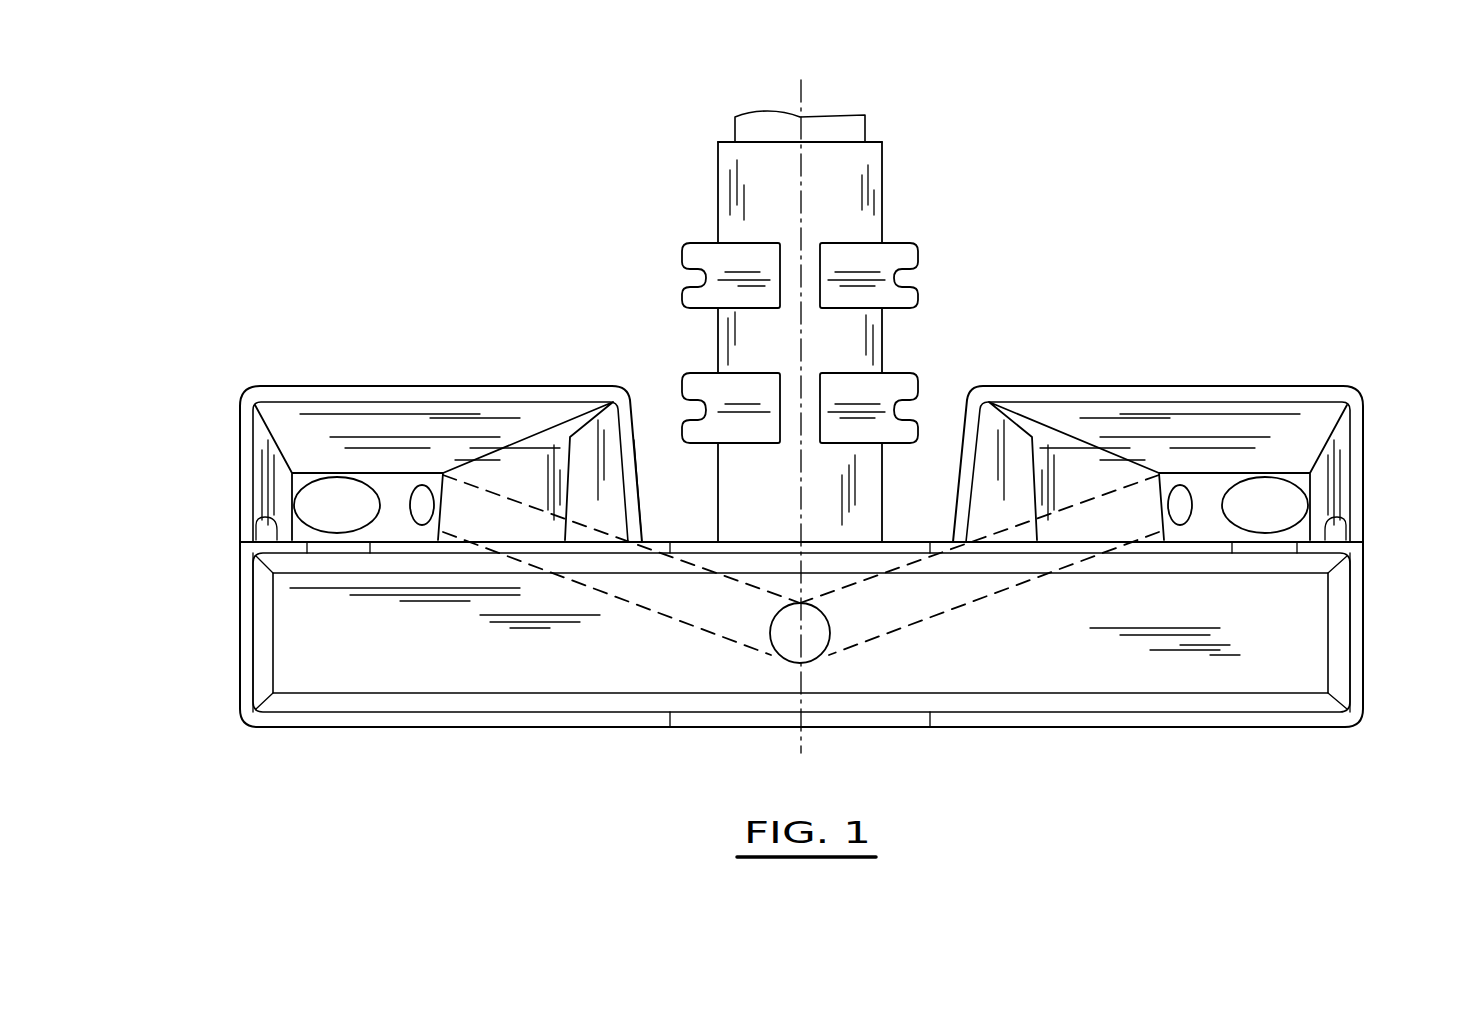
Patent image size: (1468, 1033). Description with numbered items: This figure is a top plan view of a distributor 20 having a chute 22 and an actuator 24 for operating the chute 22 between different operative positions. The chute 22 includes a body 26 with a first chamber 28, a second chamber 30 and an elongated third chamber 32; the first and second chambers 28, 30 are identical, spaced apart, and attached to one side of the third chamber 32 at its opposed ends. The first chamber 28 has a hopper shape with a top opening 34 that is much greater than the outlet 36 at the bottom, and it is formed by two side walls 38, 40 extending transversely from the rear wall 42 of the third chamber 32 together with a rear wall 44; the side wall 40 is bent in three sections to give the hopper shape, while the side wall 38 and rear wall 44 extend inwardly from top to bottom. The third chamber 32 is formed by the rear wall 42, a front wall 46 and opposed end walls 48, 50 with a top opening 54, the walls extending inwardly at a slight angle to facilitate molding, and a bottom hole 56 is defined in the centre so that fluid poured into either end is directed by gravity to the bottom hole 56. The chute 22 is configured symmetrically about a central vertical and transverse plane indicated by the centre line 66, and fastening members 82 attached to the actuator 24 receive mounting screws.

The distributor 20 is at (1157, 279).
The chute 22 is at (1238, 389).
The actuator 24 is at (884, 197).
The body 26 is at (1024, 727).
The first chamber 28 is at (512, 385).
The second chamber 30 is at (1048, 388).
The third chamber 32 is at (1185, 728).
The top opening 34 is at (357, 417).
The outlet 36 is at (317, 498).
The side wall 38 is at (240, 440).
The side wall 40 is at (645, 492).
The rear wall 42 is at (253, 519).
The rear wall 44 is at (297, 385).
The front wall 46 is at (493, 728).
The end wall 48 is at (238, 655).
The end wall 50 is at (1364, 657).
The top opening 54 is at (1290, 674).
The bottom hole 56 is at (831, 633).
The centre line 66 is at (802, 98).
The fastening members 82 is at (700, 243).